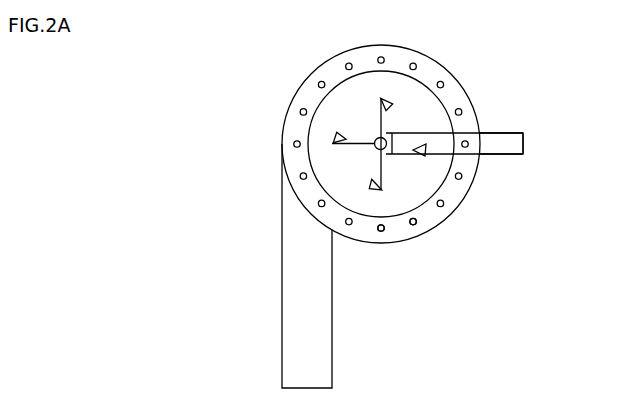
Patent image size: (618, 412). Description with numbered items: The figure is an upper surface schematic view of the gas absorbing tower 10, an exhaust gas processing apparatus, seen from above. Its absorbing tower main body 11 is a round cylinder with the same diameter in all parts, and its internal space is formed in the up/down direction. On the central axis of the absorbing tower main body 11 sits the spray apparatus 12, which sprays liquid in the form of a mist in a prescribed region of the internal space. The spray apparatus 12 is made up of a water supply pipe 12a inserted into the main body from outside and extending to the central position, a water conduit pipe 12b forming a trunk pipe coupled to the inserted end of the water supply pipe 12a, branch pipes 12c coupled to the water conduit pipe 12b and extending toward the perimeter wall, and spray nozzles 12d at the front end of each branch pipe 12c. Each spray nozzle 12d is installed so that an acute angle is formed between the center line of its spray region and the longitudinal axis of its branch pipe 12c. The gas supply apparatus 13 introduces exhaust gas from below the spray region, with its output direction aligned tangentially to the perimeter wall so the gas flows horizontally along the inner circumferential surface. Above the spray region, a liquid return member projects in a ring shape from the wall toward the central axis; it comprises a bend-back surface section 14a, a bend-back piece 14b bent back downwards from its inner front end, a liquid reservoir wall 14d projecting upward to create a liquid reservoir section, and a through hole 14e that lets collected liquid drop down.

The gas absorbing tower 10 is at (176, 33).
The absorbing tower main body 11 is at (446, 64).
The spray apparatus 12 is at (395, 126).
The water supply pipe 12a is at (505, 138).
The water conduit pipe 12b is at (375, 146).
The branch pipes 12c is at (357, 143).
The spray nozzles 12d is at (336, 133).
The gas supply apparatus 13 is at (290, 322).
The bend-back surface section 14a is at (457, 188).
The bend-back piece 14b is at (402, 209).
The liquid reservoir wall 14d is at (413, 221).
The through hole 14e is at (442, 206).